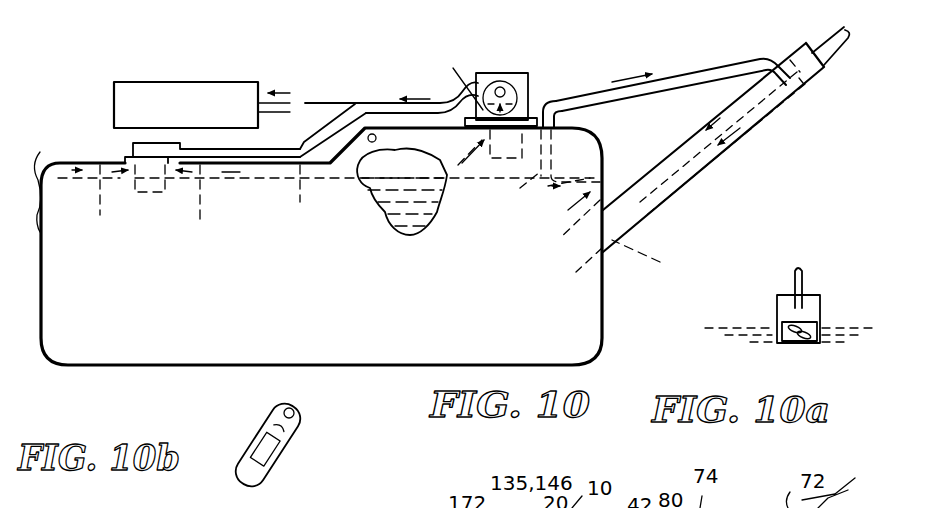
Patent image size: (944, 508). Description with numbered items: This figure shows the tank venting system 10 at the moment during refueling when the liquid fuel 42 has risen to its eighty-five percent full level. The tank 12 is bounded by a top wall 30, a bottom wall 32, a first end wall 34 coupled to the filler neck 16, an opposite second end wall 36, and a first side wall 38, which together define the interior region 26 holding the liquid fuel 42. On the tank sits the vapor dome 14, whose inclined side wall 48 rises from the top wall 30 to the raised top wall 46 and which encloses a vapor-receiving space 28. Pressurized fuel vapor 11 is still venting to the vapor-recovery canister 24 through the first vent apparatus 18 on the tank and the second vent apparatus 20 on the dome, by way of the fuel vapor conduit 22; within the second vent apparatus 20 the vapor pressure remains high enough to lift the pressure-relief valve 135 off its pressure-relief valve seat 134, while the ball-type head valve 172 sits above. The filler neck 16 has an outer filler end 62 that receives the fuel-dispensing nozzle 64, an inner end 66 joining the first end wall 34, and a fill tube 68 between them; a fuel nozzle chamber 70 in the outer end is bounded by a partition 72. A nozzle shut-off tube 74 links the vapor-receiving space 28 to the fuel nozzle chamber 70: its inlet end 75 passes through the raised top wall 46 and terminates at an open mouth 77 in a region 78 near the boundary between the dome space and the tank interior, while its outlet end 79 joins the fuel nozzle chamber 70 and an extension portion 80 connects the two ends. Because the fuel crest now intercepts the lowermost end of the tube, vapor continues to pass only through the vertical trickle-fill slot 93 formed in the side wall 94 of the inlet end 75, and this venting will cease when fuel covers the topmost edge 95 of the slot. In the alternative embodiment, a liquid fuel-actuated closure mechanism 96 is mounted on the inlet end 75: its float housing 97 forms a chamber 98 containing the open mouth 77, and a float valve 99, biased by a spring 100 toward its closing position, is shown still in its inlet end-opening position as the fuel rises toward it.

In FIG. 10, the tank venting system 10 is at (525, 46).
In FIG. 10, the pressurized fuel vapor 11 is at (288, 96).
In FIG. 10a, the pressurized fuel vapor 11 is at (800, 262).
In FIG. 10b, the pressurized fuel vapor 11 is at (236, 430).
In FIG. 10, the tank 12 is at (42, 352).
In FIG. 10, the vapor dome 14 is at (598, 128).
In FIG. 10, the filler neck 16 is at (692, 199).
In FIG. 10, the first vent apparatus 18 is at (118, 156).
In FIG. 10, the second vent apparatus 20 is at (530, 86).
In FIG. 10, the fuel vapor conduit 22 is at (332, 102).
In FIG. 10, the vapor-recovery canister 24 is at (216, 82).
In FIG. 10, the interior region 26 is at (70, 165).
In FIG. 10, the vapor-receiving space 28 is at (404, 168).
In FIG. 10, the top wall 30 is at (262, 164).
In FIG. 10, the bottom wall 32 is at (133, 367).
In FIG. 10, the first end wall 34 is at (604, 308).
In FIG. 10, the second end wall 36 is at (40, 183).
In FIG. 10, the first side wall 38 is at (186, 346).
In FIG. 10, the liquid fuel 42 is at (418, 218).
In FIG. 10a, the liquid fuel 42 is at (733, 331).
In FIG. 10, the raised top wall 46 is at (556, 100).
In FIG. 10, the inclined side wall 48 is at (376, 139).
In FIG. 10, the outer filler end 62 is at (822, 78).
In FIG. 10, the fuel-dispensing nozzle 64 is at (830, 36).
In FIG. 10, the inner end 66 is at (554, 248).
In FIG. 10, the fill tube 68 is at (664, 154).
In FIG. 10, the fuel nozzle chamber 70 is at (774, 155).
In FIG. 10, the partition 72 is at (801, 92).
In FIG. 10, the nozzle shut-off tube 74 is at (712, 62).
In FIG. 10, the inlet end 75 is at (556, 158).
In FIG. 10a, the inlet end 75 is at (811, 242).
In FIG. 10b, the inlet end 75 is at (296, 446).
In FIG. 10a, the open mouth 77 is at (808, 296).
In FIG. 10b, the open mouth 77 is at (246, 474).
In FIG. 10, the region 78 is at (651, 170).
In FIG. 10, the outlet end 79 is at (774, 62).
In FIG. 10, the extension portion 80 is at (676, 66).
In FIG. 10b, the trickle-fill slot 93 is at (270, 450).
In FIG. 10b, the side wall 94 is at (284, 404).
In FIG. 10b, the topmost edge 95 is at (261, 410).
In FIG. 10a, the liquid fuel-actuated closure mechanism 96 is at (767, 268).
In FIG. 10a, the float housing 97 is at (800, 308).
In FIG. 10a, the chamber 98 is at (787, 306).
In FIG. 10a, the float valve 99 is at (812, 344).
In FIG. 10a, the spring 100 is at (792, 340).
In FIG. 10, the pressure-relief valve seat 134 is at (455, 78).
In FIG. 10, the pressure-relief valve 135 is at (515, 86).
In FIG. 10, the ball-type head valve 172 is at (502, 85).